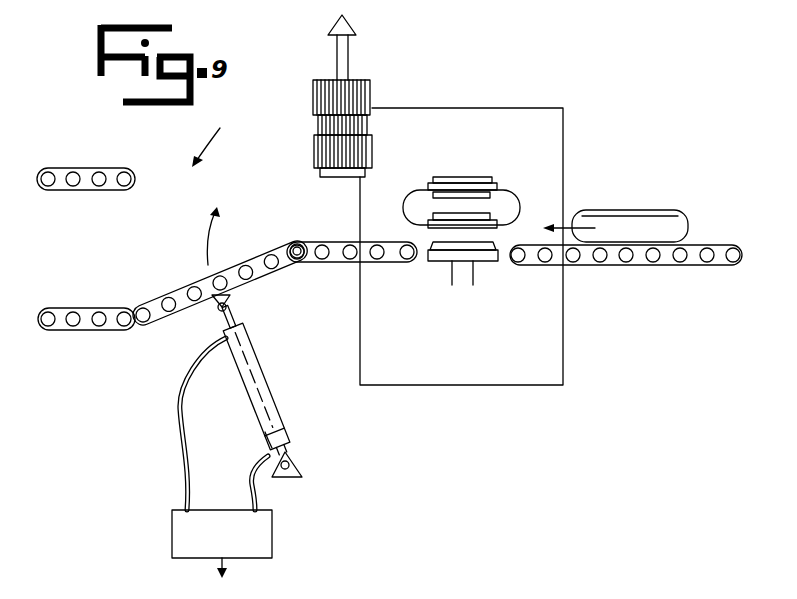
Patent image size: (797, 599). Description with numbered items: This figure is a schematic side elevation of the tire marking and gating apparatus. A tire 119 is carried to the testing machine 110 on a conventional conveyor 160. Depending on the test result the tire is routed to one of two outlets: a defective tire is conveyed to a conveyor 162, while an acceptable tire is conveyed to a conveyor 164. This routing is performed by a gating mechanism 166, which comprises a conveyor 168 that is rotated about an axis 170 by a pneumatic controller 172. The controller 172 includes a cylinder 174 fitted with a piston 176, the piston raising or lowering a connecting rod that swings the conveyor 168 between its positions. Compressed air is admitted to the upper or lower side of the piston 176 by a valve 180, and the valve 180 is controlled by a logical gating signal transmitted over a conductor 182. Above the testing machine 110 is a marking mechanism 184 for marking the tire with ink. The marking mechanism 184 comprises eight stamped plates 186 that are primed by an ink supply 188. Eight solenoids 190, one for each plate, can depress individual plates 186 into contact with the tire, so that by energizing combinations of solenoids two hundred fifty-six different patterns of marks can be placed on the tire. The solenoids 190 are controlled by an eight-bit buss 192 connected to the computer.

The testing machine 110 is at (553, 94).
The tire 119 is at (640, 210).
The conveyor 160 is at (350, 203).
The conveyor 162 is at (58, 332).
The conveyor 164 is at (62, 168).
The gating mechanism 166 is at (222, 135).
The conveyor 168 is at (203, 283).
The axis 170 is at (297, 243).
The pneumatic controller 172 is at (166, 423).
The cylinder 174 is at (270, 386).
The piston 176 is at (265, 432).
The valve 180 is at (172, 522).
The conductor 182 is at (222, 568).
The marking mechanism 184 is at (350, 107).
The stamped plates 186 is at (312, 147).
The ink supply 188 is at (318, 170).
The solenoids 190 is at (372, 92).
The 8-bit buss 192 is at (349, 47).